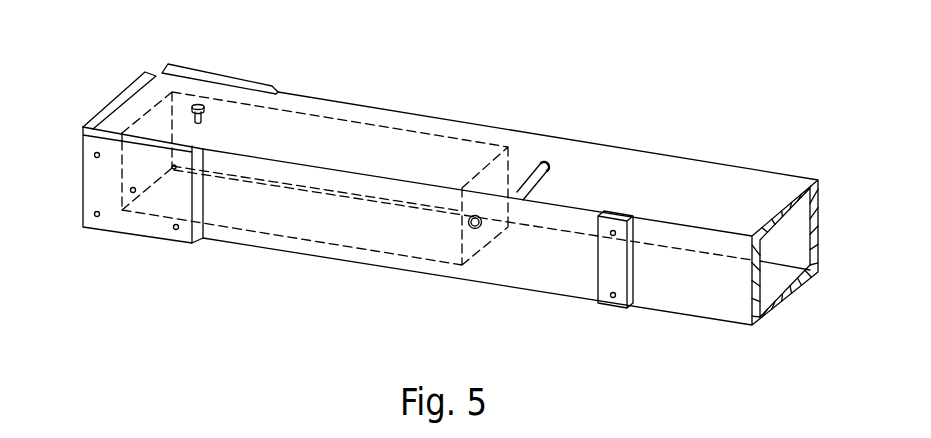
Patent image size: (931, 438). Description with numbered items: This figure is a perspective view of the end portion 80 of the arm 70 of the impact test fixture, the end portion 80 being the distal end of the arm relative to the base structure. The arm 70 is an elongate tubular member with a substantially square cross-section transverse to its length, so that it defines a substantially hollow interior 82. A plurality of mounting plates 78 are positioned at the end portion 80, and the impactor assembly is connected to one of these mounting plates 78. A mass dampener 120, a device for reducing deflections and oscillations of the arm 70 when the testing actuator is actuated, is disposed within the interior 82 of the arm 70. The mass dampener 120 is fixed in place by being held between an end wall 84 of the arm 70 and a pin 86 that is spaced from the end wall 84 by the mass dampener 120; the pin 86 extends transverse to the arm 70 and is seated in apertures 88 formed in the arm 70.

The arm 70 is at (733, 158).
The mounting plates 78 is at (248, 75).
The end portion 80 is at (652, 143).
The interior 82 is at (792, 307).
The end wall 84 is at (143, 80).
The pin 86 is at (530, 162).
The apertures 88 is at (557, 173).
The mass dampener 120 is at (413, 131).